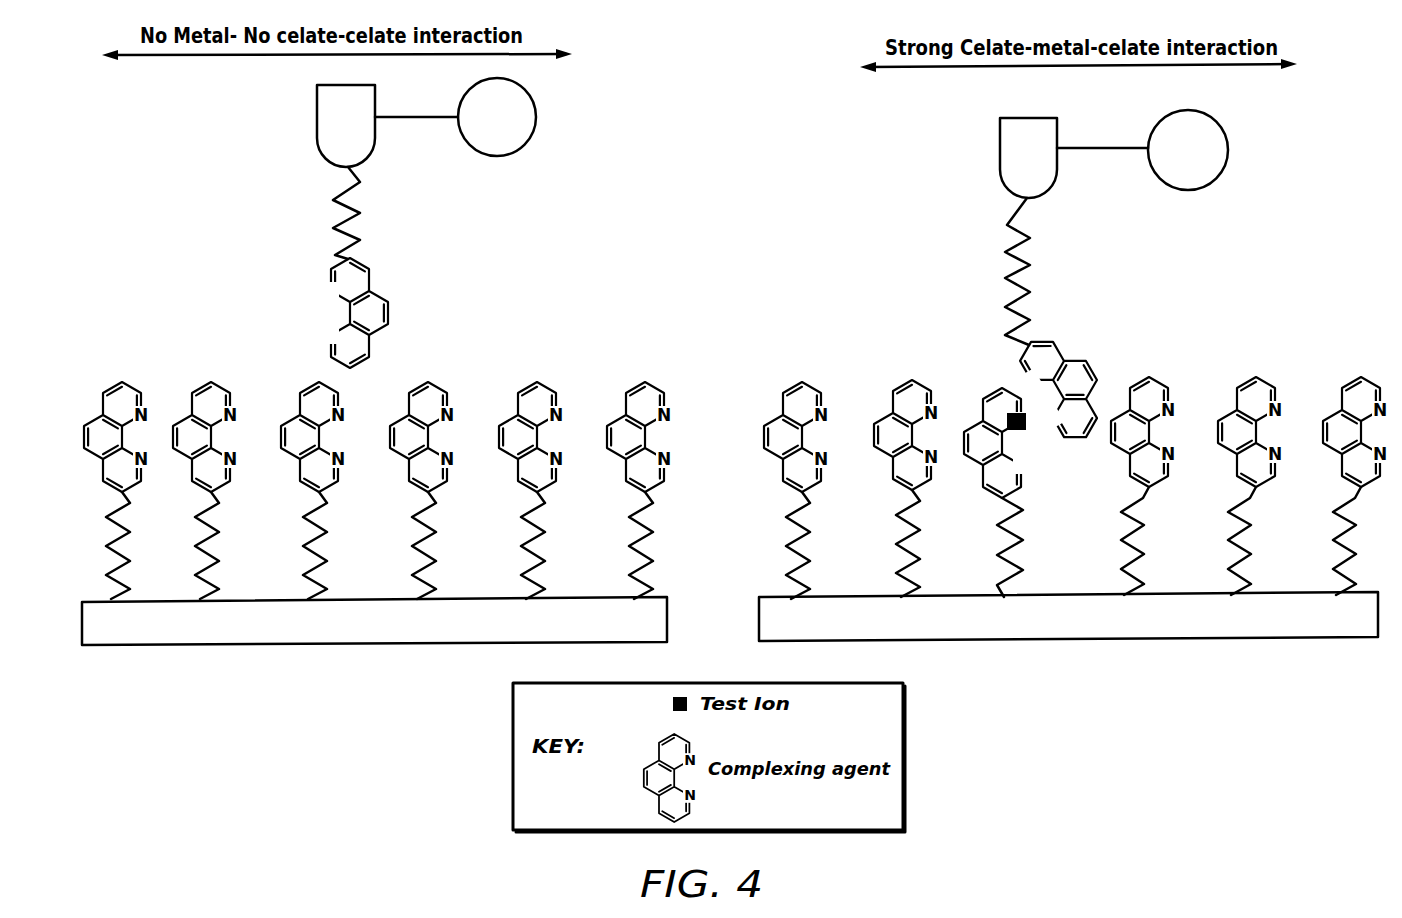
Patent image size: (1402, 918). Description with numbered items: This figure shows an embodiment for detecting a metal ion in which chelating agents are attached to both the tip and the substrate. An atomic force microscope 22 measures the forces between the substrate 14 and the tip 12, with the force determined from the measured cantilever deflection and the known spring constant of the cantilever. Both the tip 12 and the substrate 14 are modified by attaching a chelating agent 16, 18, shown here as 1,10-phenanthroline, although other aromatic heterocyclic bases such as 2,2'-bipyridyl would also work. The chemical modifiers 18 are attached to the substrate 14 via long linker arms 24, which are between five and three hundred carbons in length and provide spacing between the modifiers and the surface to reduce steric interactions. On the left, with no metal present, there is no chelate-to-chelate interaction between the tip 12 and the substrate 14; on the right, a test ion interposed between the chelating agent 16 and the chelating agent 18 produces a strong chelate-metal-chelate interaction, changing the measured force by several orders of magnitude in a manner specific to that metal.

The tip 12 is at (360, 134).
The atomic force microscope 22 is at (512, 127).
The long linker arms 24 is at (333, 228).
The chelating agent 16 is at (389, 302).
The chelating agent 18 is at (963, 397).
The substrate 14 is at (378, 633).